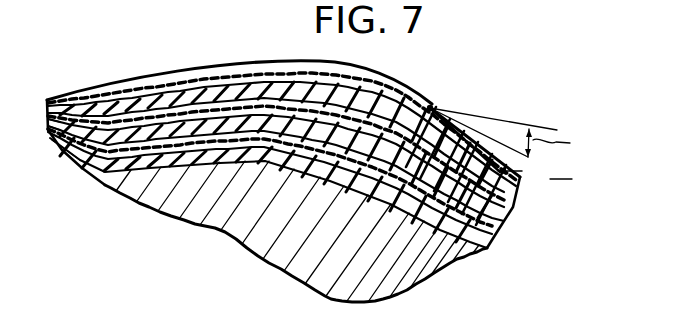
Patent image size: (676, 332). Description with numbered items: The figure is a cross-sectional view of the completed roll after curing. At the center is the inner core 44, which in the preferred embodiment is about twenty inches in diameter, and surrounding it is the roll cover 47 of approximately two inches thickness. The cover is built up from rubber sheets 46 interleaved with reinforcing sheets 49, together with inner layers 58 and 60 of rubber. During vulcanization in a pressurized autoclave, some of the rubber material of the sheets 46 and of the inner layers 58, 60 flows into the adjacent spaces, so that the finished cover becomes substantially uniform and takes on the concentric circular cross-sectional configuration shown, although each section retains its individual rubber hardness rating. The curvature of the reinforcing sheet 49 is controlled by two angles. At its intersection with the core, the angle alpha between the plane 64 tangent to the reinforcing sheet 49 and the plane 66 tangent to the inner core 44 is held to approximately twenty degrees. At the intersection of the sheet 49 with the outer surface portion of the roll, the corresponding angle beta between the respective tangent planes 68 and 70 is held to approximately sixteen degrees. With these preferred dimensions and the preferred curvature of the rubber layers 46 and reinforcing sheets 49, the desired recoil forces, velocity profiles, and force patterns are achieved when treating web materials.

The inner core 44 is at (167, 214).
The rubber sheets 46 is at (432, 106).
The roll cover 47 is at (521, 172).
The reinforcing sheet 49 is at (297, 92).
The inner layer 58 is at (360, 192).
The inner layer 60 is at (316, 173).
The plane tangent to the reinforcing sheet 64 is at (236, 74).
The plane tangent to the inner core 66 is at (238, 160).
The tangent plane 68 is at (541, 128).
The tangent plane 70 is at (560, 179).